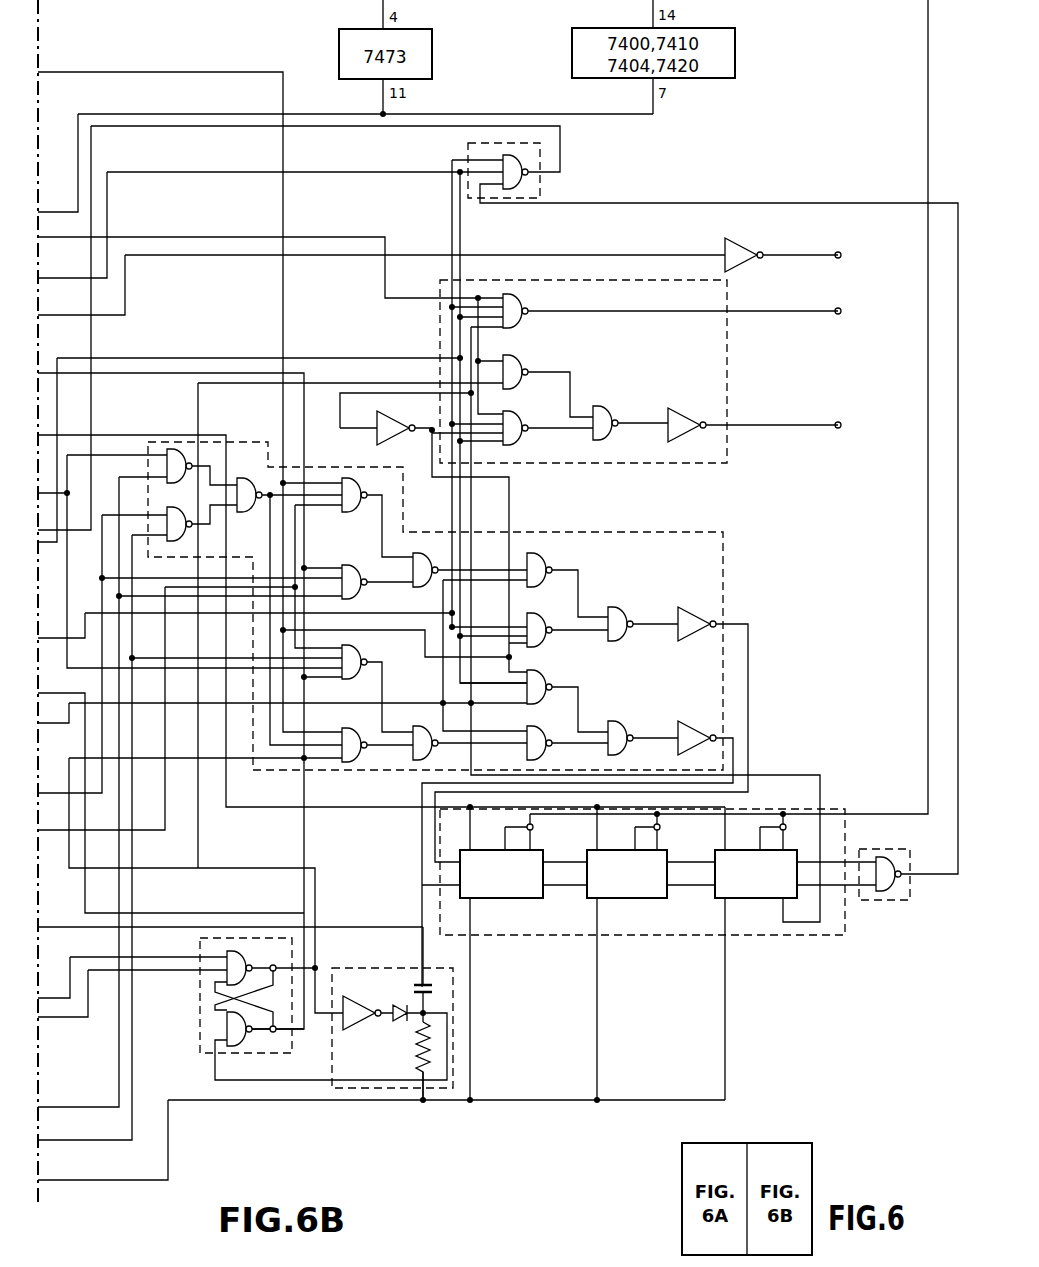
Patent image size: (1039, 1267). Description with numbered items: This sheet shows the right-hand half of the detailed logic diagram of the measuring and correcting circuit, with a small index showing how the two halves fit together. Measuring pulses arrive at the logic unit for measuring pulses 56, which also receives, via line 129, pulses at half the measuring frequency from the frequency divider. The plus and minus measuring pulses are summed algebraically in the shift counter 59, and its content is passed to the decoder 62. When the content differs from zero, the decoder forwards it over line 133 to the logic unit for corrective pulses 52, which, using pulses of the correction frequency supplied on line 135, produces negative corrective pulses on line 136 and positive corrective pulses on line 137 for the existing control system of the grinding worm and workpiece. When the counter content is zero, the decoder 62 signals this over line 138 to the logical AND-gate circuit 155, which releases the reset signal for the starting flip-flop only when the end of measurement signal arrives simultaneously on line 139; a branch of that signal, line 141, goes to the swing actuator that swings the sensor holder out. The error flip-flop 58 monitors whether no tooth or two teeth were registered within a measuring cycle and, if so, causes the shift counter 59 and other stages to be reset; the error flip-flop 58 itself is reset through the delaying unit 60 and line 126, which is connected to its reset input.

The line 129 is at (283, 292).
The line 133 is at (790, 775).
The line 135 is at (212, 237).
The line 136 is at (802, 310).
The line 137 is at (802, 424).
The line 138 is at (765, 203).
The line 139 is at (473, 170).
The line 141 is at (830, 253).
The logical AND-gate circuit 155 is at (540, 198).
The logic unit for corrective pulses 52 is at (727, 398).
The logic unit for measuring pulses 56 is at (398, 604).
The error flip-flop 58 is at (198, 1028).
The shift counter 59 is at (748, 935).
The delaying unit 60 is at (456, 1026).
The decoder 62 is at (862, 900).
The line 126 is at (376, 1078).